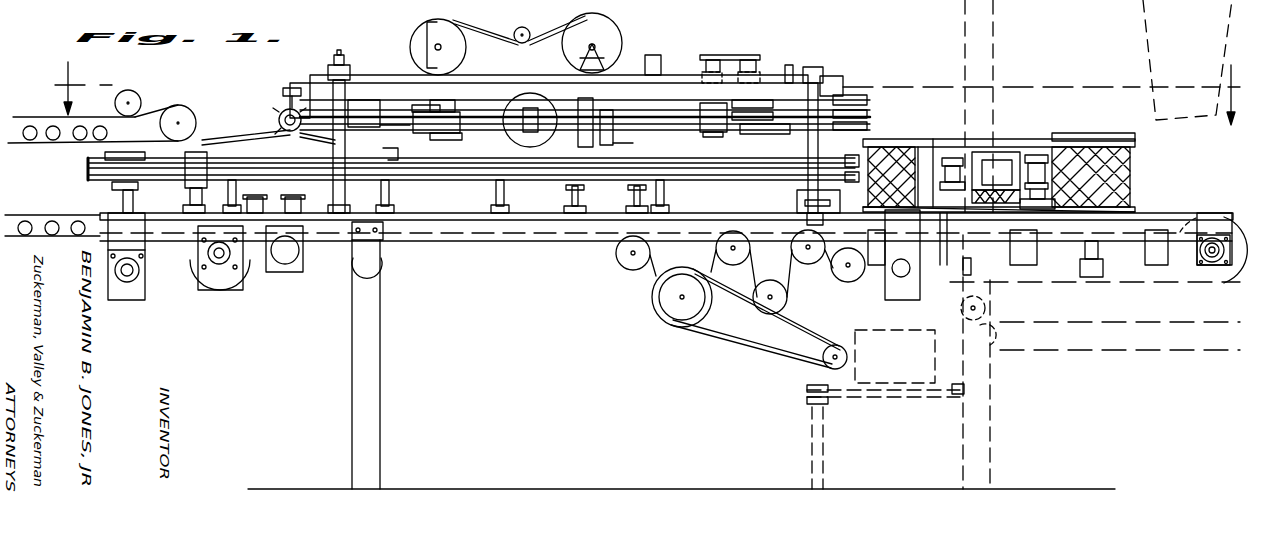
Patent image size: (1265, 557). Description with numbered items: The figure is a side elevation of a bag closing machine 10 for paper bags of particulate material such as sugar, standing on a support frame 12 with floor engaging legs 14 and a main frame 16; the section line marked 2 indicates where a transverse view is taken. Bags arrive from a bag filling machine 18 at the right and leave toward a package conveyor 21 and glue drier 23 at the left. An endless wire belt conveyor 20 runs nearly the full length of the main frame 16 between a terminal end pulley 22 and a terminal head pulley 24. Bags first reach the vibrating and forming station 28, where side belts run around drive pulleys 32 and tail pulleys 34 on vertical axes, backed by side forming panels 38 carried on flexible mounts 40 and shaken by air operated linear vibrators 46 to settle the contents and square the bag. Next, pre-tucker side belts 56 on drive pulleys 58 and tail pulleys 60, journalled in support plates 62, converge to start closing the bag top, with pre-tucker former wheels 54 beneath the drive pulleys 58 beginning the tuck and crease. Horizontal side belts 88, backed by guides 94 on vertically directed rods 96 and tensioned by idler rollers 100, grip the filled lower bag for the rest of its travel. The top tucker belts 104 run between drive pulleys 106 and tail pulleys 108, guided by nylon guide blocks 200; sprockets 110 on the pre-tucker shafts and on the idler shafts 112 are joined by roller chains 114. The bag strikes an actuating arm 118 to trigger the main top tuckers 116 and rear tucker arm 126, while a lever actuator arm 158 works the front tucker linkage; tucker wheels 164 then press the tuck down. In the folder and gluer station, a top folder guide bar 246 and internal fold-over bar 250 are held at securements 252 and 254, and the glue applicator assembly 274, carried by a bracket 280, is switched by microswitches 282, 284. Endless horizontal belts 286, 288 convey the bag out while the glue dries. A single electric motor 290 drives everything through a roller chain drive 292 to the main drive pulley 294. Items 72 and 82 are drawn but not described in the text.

The section line 2- 2 is at (638, 106).
The bag closing machine 10 is at (504, 278).
The support frame 12 is at (430, 243).
The floor engaging legs 14 is at (375, 372).
The main frame 16 is at (555, 242).
The bag filling machine 18 is at (1141, 31).
The endless wire belt conveyor 20 is at (432, 212).
The package conveyor 21 is at (34, 210).
The terminal end pulley 22 is at (1220, 280).
The glue drier 23 is at (45, 152).
The terminal head pulley 24 is at (230, 293).
The vibrating and forming station 28 is at (999, 161).
The drive pulleys 32 is at (912, 142).
The tail pulleys 34 is at (1095, 140).
The side forming panel 38 is at (1033, 143).
The flexible mounts 40 is at (1018, 205).
The air operated linear vibrators 46 is at (963, 268).
The pre-tucker former wheels 54 is at (738, 132).
The pre-tucker side belts 56 is at (784, 134).
The drive pulleys 58 is at (765, 120).
The tail pulleys 60 is at (868, 118).
The support plates 62 is at (782, 104).
The stop 72 is at (672, 72).
The upright post 82 is at (805, 187).
The horizontal side belts 88 is at (140, 186).
The guides 94 is at (276, 179).
The vertically directed rods 96 is at (228, 198).
The idler rollers 100 is at (185, 192).
The top tucker belts 104 is at (460, 112).
The drive pulleys 106 is at (576, 85).
The tail pulleys 108 is at (709, 110).
The sprockets 110 is at (712, 55).
The idler shafts 112 is at (698, 70).
The roller chains 114 is at (740, 56).
The main top tuckers 116 is at (610, 106).
The actuating arm 118 is at (628, 189).
The rear tucker arm 126 is at (578, 146).
The lever actuator arm 158 is at (566, 198).
The tucker wheels 164 is at (535, 100).
The nylon guide blocks 200 is at (477, 146).
The top folder guide bar 246 is at (242, 136).
The internal fold-over bar 250 is at (314, 144).
The securement 252 is at (379, 113).
The securement 254 is at (293, 84).
The glue applicator assembly 274 is at (282, 117).
The bracket 280 is at (310, 78).
The microswitch 282 is at (305, 202).
The microswitch 284 is at (264, 198).
The endless horizontal belt 286 is at (88, 144).
The endless horizontal belt 288 is at (82, 208).
The electric motor 290 is at (890, 328).
The roller chain drive 292 is at (754, 342).
The main drive pulley 294 is at (664, 327).